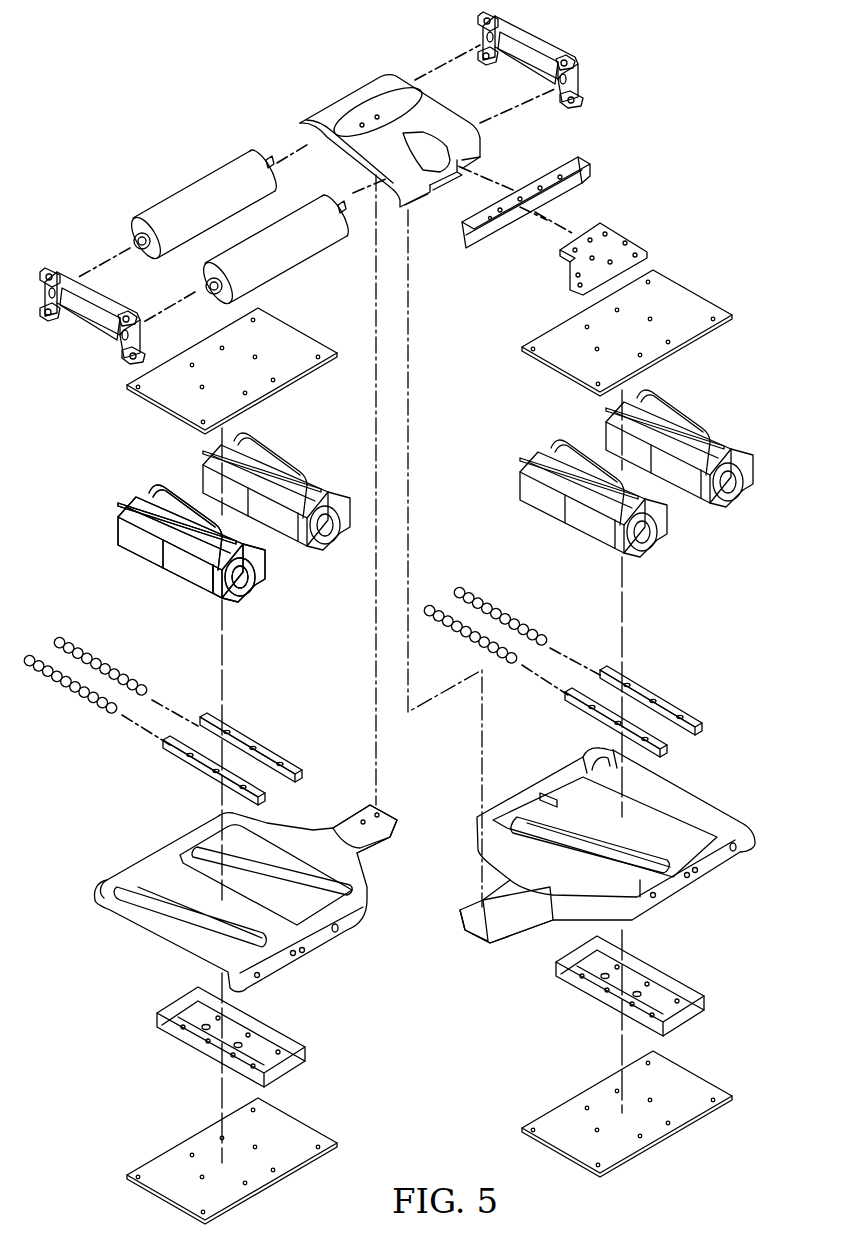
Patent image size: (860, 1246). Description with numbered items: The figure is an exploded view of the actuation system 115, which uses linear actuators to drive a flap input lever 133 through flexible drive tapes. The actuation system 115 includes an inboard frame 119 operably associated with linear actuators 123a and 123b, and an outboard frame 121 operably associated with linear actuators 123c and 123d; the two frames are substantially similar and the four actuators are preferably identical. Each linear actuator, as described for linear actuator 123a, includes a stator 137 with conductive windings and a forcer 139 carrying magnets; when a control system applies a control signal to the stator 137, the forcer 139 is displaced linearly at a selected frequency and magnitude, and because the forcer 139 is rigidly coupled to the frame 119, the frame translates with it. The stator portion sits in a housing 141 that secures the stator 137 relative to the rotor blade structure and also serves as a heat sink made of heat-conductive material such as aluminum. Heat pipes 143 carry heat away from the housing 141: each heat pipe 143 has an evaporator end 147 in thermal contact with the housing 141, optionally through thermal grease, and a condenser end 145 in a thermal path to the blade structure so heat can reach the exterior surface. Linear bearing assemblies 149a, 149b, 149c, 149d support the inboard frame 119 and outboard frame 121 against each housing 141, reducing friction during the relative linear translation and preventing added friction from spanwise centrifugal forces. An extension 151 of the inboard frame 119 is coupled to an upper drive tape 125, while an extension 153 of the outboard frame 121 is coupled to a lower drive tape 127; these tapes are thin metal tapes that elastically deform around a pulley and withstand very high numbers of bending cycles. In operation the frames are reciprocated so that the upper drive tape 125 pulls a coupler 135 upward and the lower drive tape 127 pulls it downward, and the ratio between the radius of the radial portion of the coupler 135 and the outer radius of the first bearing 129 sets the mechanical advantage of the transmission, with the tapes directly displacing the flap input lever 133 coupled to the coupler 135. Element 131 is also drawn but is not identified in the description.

The actuation system 115 is at (205, 65).
The inboard frame 119 is at (249, 898).
The outboard frame 121 is at (595, 846).
The linear actuator 123a is at (189, 548).
The linear actuator 123b is at (287, 447).
The linear actuator 123c is at (540, 522).
The linear actuator 123d is at (757, 462).
The upper drive tape 125 is at (342, 100).
The lower drive tape 127 is at (513, 133).
The first bearing 129 is at (289, 271).
The roller 131 is at (193, 187).
The flap input lever 133 is at (623, 237).
The coupler 135 is at (493, 233).
The stator 137 is at (233, 588).
The forcer 139 is at (172, 942).
The housing 141 is at (118, 520).
The heat pipe 143 is at (157, 487).
The condenser end 145 is at (240, 532).
The evaporator end 147 is at (262, 572).
The linear bearing assembly 149a is at (170, 755).
The linear bearing assembly 149b is at (280, 757).
The linear bearing assembly 149c is at (570, 707).
The linear bearing assembly 149d is at (680, 705).
The extension 151 is at (393, 835).
The extension 153 is at (464, 915).